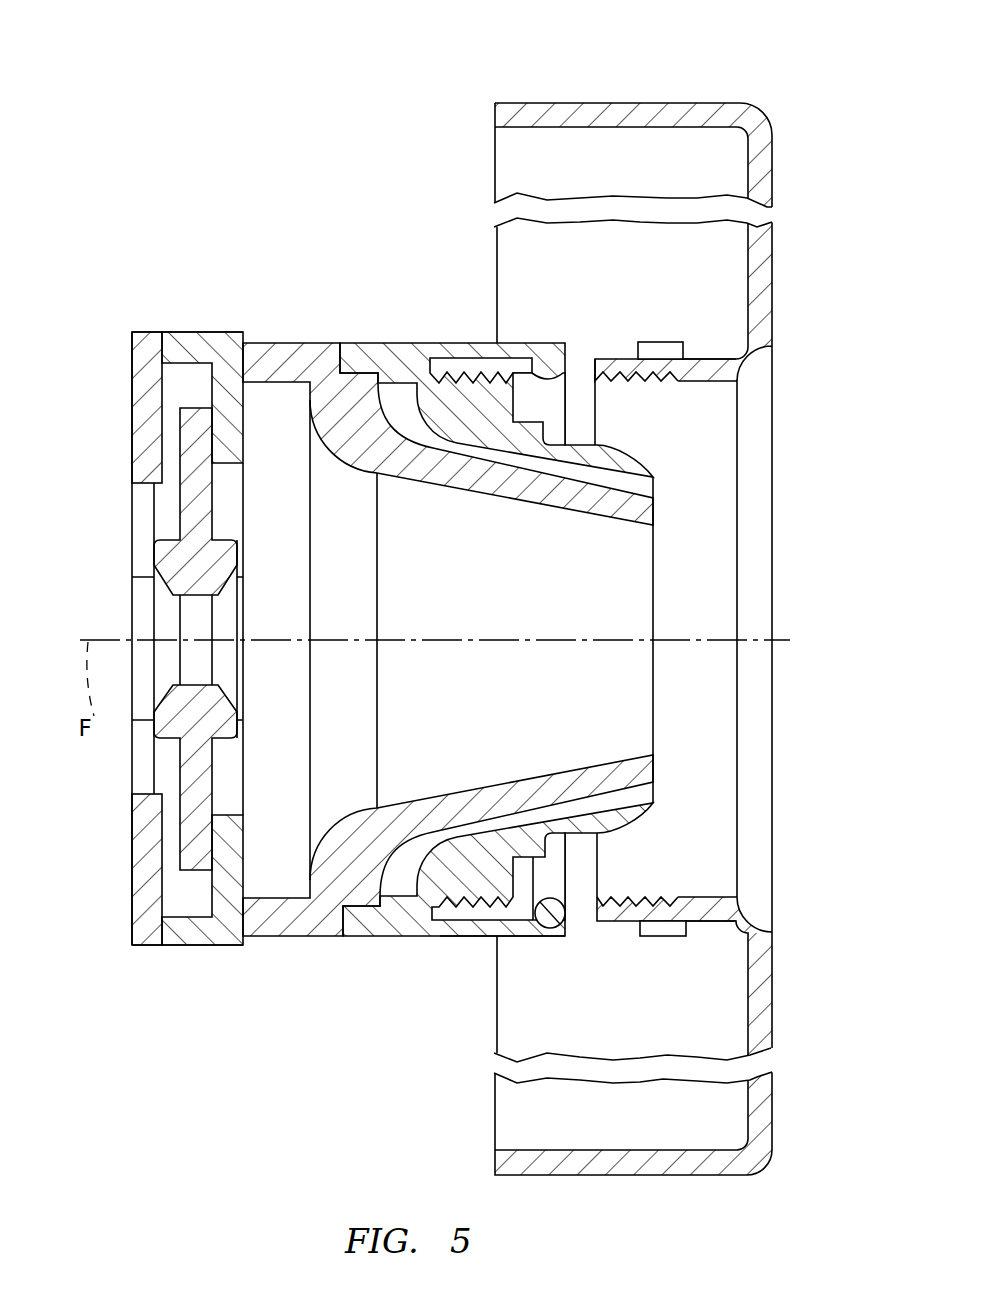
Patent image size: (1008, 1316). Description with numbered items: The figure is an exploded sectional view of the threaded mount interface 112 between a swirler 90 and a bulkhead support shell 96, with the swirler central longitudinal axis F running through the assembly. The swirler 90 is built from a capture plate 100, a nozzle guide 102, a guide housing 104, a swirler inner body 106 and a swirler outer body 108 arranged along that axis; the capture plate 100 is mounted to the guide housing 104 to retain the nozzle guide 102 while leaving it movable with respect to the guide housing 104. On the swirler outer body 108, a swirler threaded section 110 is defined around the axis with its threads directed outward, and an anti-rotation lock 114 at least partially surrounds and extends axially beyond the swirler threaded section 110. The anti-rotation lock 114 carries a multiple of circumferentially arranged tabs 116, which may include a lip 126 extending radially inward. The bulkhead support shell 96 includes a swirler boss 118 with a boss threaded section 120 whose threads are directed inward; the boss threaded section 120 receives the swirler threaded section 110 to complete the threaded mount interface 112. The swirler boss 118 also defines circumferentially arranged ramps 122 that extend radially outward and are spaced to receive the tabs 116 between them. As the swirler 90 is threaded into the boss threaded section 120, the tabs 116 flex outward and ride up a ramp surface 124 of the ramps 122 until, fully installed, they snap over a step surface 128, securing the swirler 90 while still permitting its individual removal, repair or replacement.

The swirler 90 is at (140, 635).
The bulkhead support shell 96 is at (634, 590).
The capture plate 100 is at (146, 375).
The nozzle guide 102 is at (190, 418).
The guide housing 104 is at (220, 330).
The swirler inner body 106 is at (327, 362).
The swirler outer body 108 is at (501, 637).
The swirler threaded section 110 is at (482, 903).
The threaded mount interface 112 is at (678, 886).
The anti-rotation lock 114 is at (520, 944).
The circumferentially arranged tabs 116 is at (540, 932).
The swirler boss 118 is at (685, 322).
The boss threaded section 120 is at (678, 384).
The circumferentially arranged ramps 122 is at (651, 336).
The ramp surface 124 is at (655, 938).
The lip 126 is at (555, 893).
The step surface 128 is at (689, 928).